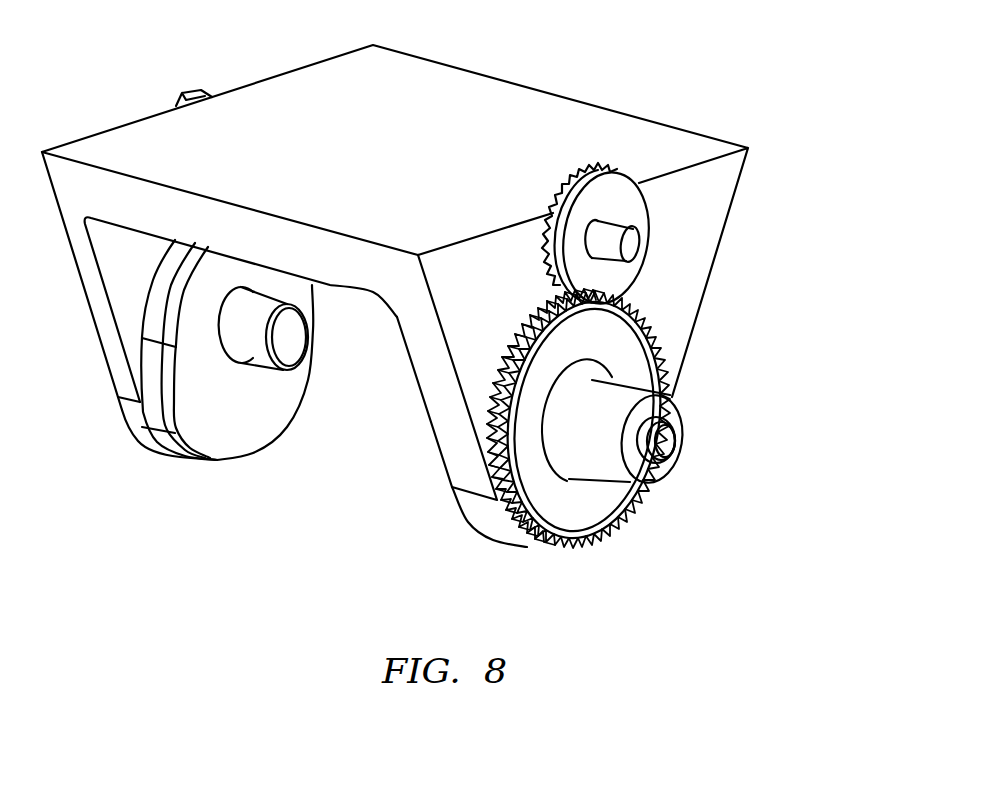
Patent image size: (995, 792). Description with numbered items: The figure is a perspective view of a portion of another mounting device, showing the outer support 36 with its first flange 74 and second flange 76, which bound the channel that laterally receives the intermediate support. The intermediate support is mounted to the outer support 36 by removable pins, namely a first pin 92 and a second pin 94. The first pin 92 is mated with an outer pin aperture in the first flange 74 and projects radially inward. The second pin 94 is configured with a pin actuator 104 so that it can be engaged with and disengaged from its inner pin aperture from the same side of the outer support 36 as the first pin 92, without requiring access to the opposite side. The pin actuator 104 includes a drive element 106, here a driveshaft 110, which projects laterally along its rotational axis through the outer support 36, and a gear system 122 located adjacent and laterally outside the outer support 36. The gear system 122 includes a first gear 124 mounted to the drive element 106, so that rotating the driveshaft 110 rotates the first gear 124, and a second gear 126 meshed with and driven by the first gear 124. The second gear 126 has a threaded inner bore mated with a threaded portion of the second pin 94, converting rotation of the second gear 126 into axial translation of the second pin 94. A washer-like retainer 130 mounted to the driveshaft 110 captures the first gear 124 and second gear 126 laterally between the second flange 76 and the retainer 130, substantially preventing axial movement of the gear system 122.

The outer support 36 is at (697, 108).
The first flange 74 is at (121, 367).
The second flange 76 is at (450, 455).
The first pin 92 is at (293, 347).
The second pin 94 is at (667, 440).
The pin actuator 104 is at (675, 420).
The drive element 106 is at (711, 248).
The driveshaft 110 is at (632, 242).
The gear system 122 is at (692, 385).
The first gear 124 is at (562, 190).
The second gear 126 is at (613, 530).
The retainer 130 is at (623, 172).